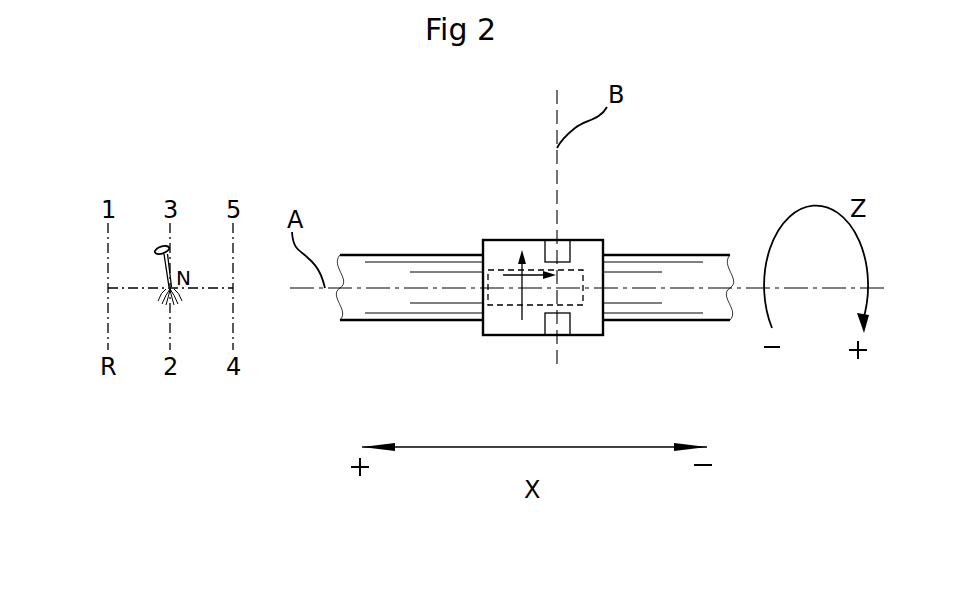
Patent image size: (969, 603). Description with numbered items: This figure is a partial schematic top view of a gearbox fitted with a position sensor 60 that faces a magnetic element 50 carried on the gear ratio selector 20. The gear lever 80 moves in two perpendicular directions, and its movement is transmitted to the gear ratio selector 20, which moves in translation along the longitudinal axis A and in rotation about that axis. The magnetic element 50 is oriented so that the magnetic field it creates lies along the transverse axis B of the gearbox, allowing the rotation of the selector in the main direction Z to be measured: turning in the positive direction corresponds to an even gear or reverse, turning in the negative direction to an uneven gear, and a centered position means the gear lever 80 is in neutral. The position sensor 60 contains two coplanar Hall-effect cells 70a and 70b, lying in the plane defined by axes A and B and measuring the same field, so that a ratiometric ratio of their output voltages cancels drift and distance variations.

The gear ratio selector 20 is at (697, 265).
The magnetic element 50 is at (505, 292).
The position sensor 60 is at (498, 252).
The Hall-effect cell 70a is at (567, 251).
The Hall-effect cell 70b is at (565, 335).
The gear lever 80 is at (160, 246).